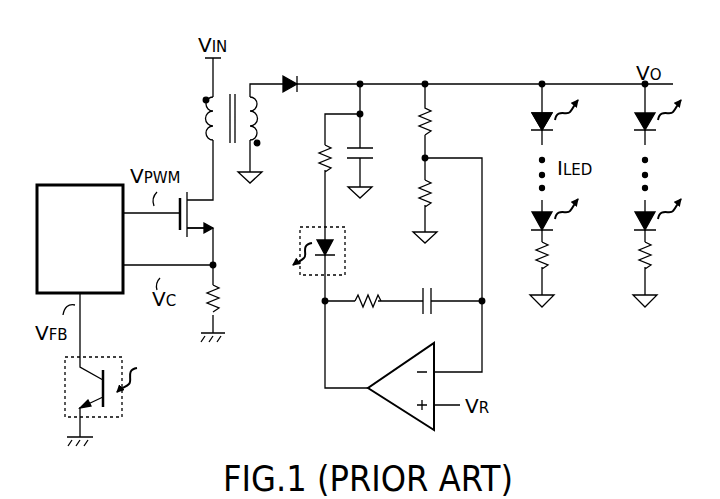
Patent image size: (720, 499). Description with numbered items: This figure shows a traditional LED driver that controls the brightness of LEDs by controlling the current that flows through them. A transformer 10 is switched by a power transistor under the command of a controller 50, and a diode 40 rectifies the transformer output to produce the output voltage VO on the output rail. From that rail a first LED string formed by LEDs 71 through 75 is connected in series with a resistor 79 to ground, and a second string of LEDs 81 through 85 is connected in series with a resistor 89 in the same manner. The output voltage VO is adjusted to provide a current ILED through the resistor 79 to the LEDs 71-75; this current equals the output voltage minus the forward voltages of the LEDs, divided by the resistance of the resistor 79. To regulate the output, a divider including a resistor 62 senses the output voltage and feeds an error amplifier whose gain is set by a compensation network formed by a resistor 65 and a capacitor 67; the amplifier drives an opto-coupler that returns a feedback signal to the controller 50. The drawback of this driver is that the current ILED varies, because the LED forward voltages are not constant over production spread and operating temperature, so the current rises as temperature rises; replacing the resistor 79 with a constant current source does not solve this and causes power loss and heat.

The transformer 10 is at (228, 95).
The rectifier diode 40 is at (292, 85).
The PWM controller 50 is at (65, 190).
The feedback divider resistor 62 is at (436, 191).
The compensation resistor 65 is at (364, 291).
The compensation capacitor 67 is at (429, 286).
The LED 71 is at (525, 125).
The LED 75 is at (525, 225).
The resistor 79 is at (553, 253).
The LED of second string 81 is at (628, 125).
The LED of second string 85 is at (628, 225).
The current limiting resistor of second string 89 is at (656, 253).